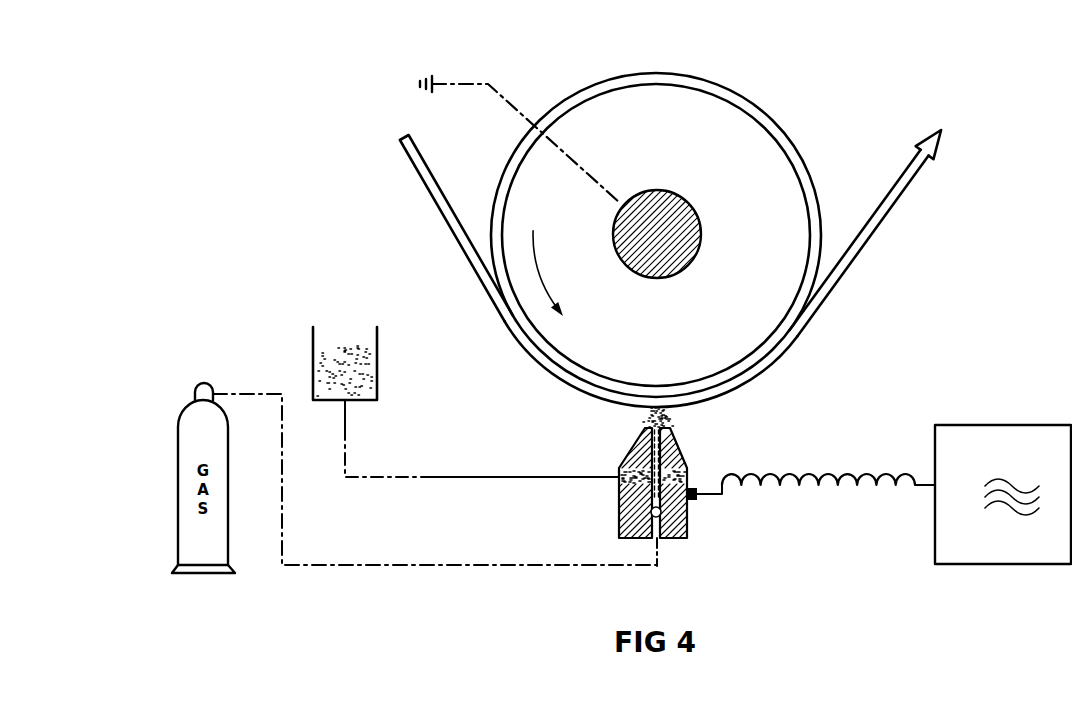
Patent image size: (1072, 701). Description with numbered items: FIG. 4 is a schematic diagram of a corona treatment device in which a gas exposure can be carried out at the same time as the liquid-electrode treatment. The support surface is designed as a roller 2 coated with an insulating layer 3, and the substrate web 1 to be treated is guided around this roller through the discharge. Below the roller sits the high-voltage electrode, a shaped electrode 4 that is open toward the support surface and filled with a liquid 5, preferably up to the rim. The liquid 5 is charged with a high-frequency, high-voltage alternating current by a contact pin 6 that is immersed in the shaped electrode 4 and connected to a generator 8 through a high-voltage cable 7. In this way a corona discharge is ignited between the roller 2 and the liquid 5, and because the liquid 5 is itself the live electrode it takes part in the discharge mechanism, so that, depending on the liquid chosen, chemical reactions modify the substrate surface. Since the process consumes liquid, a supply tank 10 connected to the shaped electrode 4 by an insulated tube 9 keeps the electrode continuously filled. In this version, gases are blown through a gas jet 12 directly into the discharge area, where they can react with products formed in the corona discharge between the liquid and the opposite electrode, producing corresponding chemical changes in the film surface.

The substrate web 1 is at (870, 242).
The roller 2 is at (676, 74).
The insulating layer 3 is at (745, 93).
The shaped electrode 4 is at (688, 524).
The liquid 5 is at (670, 446).
The contact pin 6 is at (696, 499).
The high-voltage cable 7 is at (828, 486).
The generator 8 is at (935, 537).
The insulated tube 9 is at (418, 480).
The supply tank 10 is at (313, 360).
The gas jet 12 is at (641, 513).